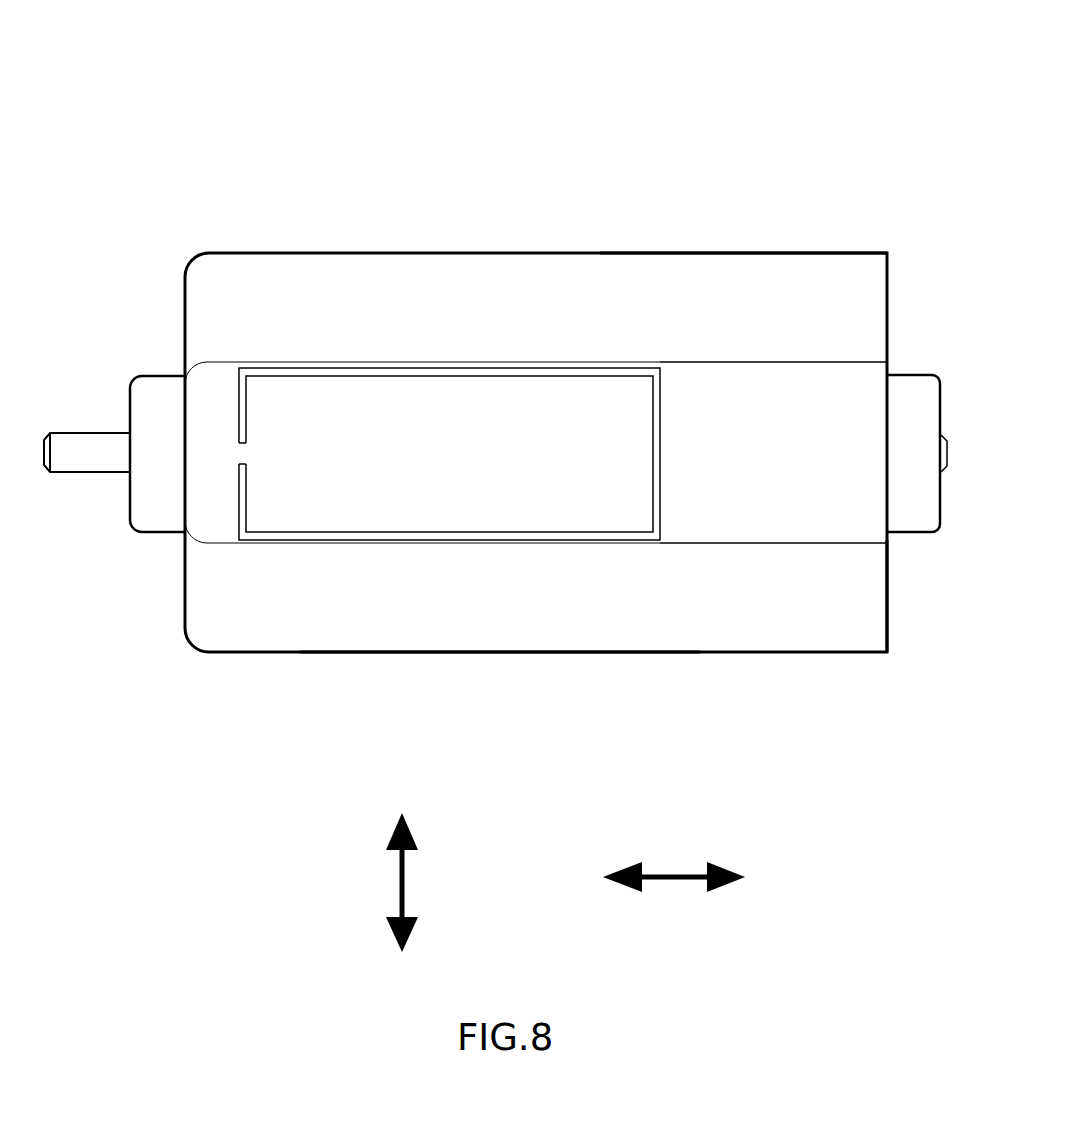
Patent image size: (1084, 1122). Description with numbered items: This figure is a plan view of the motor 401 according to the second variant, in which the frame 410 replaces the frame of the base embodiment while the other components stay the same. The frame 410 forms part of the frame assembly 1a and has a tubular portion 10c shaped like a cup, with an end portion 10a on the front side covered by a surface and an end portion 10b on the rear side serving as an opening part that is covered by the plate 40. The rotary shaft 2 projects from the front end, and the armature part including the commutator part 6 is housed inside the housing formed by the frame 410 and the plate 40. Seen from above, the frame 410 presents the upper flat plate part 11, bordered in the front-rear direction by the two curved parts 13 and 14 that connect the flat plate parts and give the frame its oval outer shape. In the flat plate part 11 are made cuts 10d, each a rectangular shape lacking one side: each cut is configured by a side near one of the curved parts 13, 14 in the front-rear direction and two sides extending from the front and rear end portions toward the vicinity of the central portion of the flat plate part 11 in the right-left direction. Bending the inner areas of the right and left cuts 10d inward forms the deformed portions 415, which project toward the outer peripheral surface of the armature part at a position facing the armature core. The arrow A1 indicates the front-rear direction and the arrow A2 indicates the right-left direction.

The motor 401 is at (133, 47).
The frame assembly 1a is at (232, 228).
The frame 410 is at (492, 280).
The tubular portion 10c is at (536, 452).
The cuts 10d is at (450, 540).
The deformed portions 415 is at (542, 403).
The curved part 14 is at (728, 278).
The flat plate part 11 is at (827, 413).
The plate 40 is at (946, 360).
The end portion 10a is at (185, 632).
The rotary shaft 2 is at (82, 455).
The curved part 13 is at (505, 652).
The commutator part 6 is at (741, 552).
The end portion 10b is at (887, 610).
The front-rear direction arrow A1 is at (693, 873).
The right-left direction arrow A2 is at (400, 875).